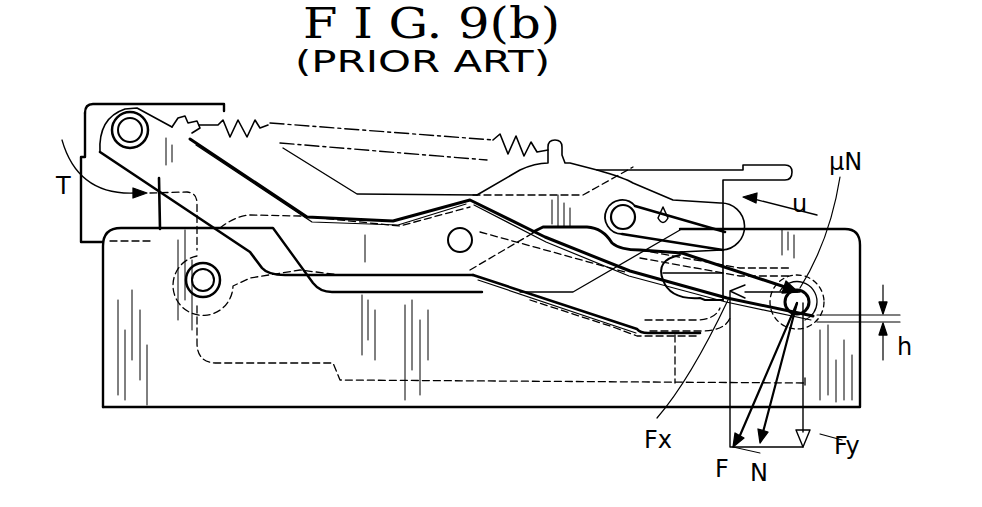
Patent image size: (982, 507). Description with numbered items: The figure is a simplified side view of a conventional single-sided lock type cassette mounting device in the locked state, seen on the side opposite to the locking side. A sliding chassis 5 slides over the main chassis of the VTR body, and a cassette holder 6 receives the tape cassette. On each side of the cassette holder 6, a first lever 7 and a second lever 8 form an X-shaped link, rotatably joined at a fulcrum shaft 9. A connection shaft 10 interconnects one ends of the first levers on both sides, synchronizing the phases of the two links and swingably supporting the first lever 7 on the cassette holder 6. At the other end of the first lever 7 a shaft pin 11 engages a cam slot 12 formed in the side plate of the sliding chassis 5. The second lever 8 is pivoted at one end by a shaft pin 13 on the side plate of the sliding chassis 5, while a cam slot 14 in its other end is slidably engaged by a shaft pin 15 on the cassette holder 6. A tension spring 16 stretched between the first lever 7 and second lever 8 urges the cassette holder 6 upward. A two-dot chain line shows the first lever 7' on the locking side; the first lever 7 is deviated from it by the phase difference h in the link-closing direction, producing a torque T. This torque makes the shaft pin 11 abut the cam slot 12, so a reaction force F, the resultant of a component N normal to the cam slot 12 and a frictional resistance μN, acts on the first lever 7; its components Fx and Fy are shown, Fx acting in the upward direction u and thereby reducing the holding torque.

The sliding chassis 5 is at (247, 392).
The cassette holder 6 is at (703, 183).
The first lever 7 is at (456, 192).
The first lever on the locking side 7' is at (586, 365).
The second lever 8 is at (587, 177).
The fulcrum shaft 9 is at (460, 242).
The connection shaft 10 is at (130, 130).
The shaft pin 11 is at (815, 285).
The cam slot 12 is at (747, 303).
The shaft pin 13 is at (187, 282).
The cam slot 14 is at (662, 212).
The shaft pin 15 is at (623, 217).
The tension spring 16 is at (386, 130).